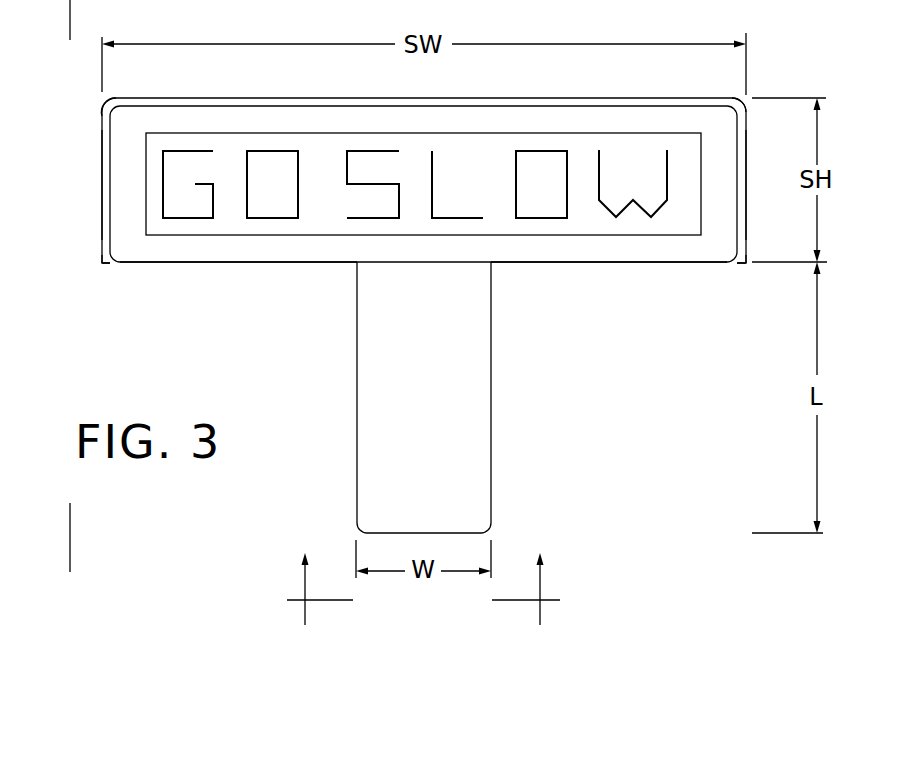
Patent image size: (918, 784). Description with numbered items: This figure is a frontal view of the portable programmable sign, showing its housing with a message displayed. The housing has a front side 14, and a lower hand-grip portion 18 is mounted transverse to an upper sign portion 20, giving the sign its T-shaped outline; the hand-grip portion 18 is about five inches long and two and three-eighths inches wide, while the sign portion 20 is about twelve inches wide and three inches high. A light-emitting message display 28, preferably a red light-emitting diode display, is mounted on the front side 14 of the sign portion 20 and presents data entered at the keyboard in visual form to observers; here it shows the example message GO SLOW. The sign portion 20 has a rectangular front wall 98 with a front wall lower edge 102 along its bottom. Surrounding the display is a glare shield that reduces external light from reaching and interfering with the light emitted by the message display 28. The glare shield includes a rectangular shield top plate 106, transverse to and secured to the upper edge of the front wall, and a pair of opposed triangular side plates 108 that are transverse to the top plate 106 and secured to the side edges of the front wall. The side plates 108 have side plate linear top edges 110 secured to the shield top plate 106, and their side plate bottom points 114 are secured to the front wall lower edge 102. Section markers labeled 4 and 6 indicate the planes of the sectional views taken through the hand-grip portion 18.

The section line 4- 4 is at (108, 552).
The section line 6- 6 is at (423, 607).
The front side 14 is at (645, 256).
The lower hand-grip portion 18 is at (475, 413).
The upper sign portion 20 is at (92, 156).
The light-emitting message display 28 is at (324, 160).
The rectangular front wall 98 is at (210, 254).
The front wall lower edge 102 is at (527, 264).
The shield top plate 106 is at (569, 100).
The side plates 108 is at (105, 222).
The side plate linear top edges 110 is at (107, 104).
The side plate bottom points 114 is at (100, 265).